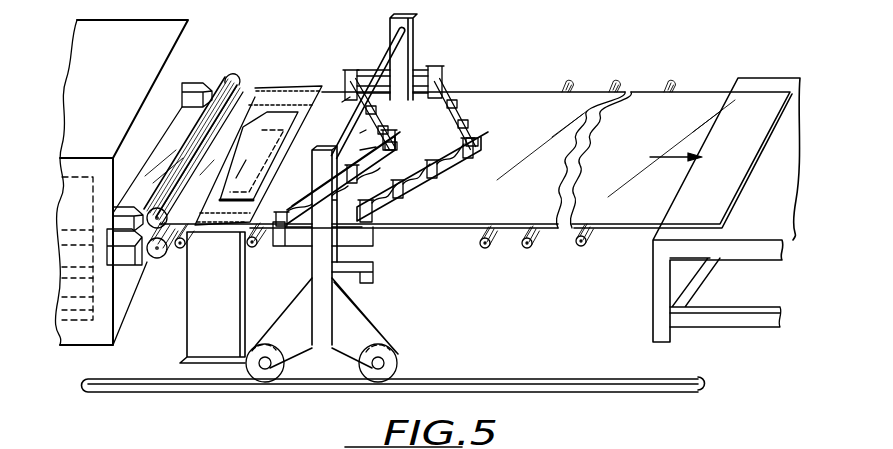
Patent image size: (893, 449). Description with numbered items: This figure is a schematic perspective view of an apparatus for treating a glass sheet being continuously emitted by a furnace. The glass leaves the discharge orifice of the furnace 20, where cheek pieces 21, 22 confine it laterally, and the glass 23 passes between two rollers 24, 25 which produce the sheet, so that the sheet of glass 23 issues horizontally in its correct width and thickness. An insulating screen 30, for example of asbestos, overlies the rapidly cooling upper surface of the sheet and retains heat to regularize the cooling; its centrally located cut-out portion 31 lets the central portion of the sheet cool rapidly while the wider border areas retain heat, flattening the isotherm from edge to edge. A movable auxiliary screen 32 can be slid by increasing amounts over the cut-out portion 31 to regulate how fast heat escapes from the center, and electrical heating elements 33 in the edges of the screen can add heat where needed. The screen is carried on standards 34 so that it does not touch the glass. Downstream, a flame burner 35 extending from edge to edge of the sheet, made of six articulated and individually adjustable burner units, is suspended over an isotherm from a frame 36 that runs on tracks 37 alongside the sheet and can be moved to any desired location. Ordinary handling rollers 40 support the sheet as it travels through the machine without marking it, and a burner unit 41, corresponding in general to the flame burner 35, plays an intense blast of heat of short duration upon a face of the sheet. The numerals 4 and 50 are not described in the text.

The discharge orifice of the furnace 20 is at (88, 207).
The cheek piece 21 is at (115, 207).
The cheek piece 22 is at (195, 82).
The glass sheet 23 is at (250, 97).
The roller 24 is at (193, 140).
The roller 25 is at (150, 260).
The insulating screen 30 is at (276, 80).
The cut-out portion 31 is at (247, 128).
The movable auxiliary screen 32 is at (248, 160).
The electrical heating elements 33 is at (293, 90).
The standards 34 is at (192, 316).
The flame burner 35 is at (374, 113).
The frame 36 is at (313, 262).
The tracks 37 is at (478, 382).
The rollers 40 is at (529, 247).
The burner unit 41 is at (472, 165).
The roller 4 is at (485, 246).
The table 50 is at (657, 297).